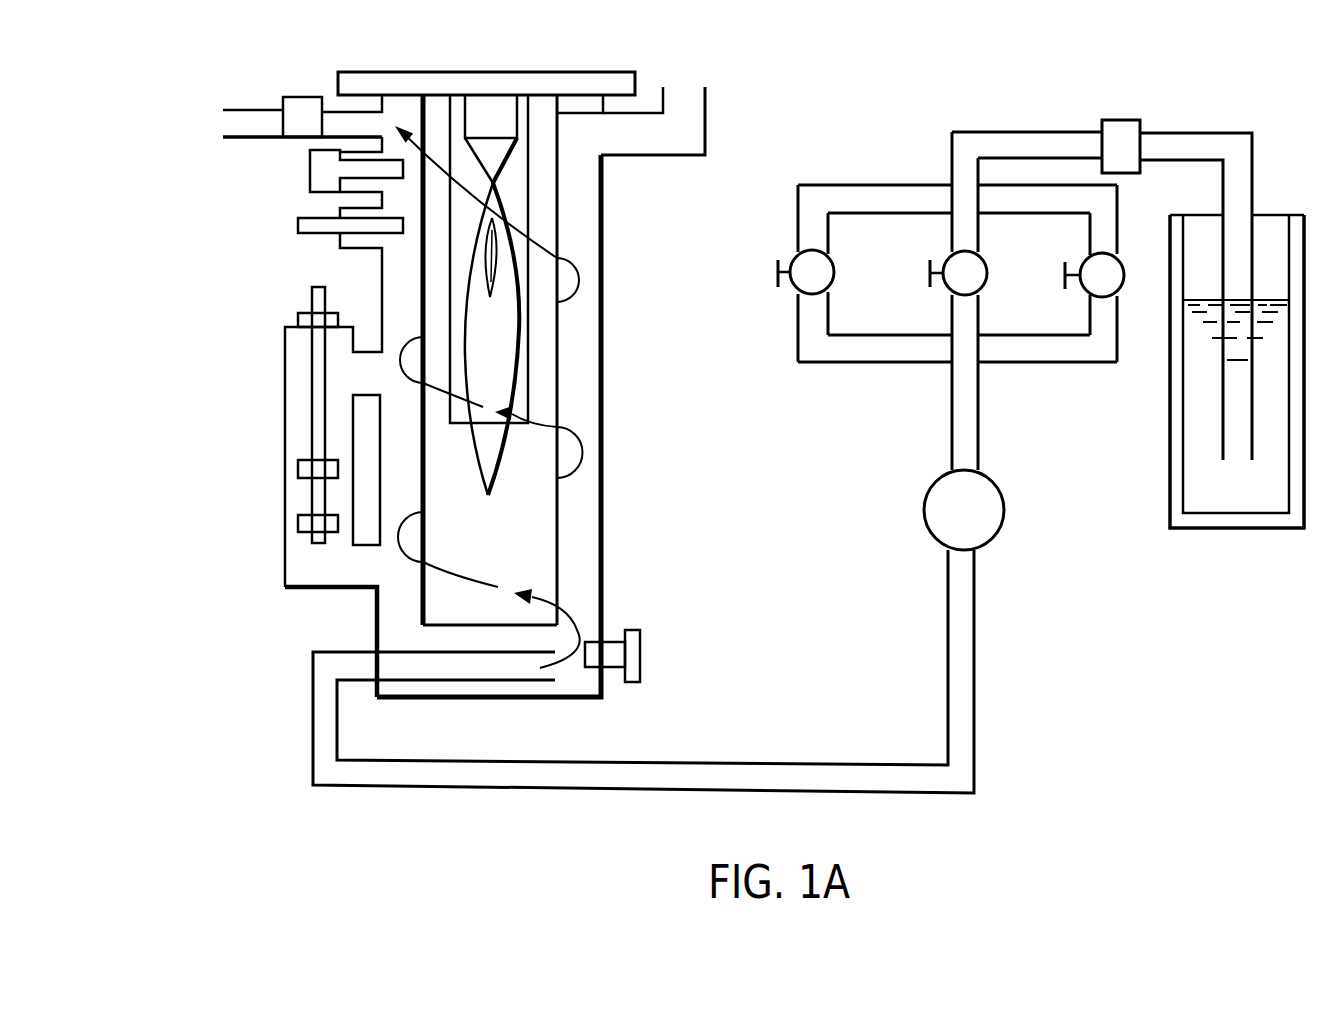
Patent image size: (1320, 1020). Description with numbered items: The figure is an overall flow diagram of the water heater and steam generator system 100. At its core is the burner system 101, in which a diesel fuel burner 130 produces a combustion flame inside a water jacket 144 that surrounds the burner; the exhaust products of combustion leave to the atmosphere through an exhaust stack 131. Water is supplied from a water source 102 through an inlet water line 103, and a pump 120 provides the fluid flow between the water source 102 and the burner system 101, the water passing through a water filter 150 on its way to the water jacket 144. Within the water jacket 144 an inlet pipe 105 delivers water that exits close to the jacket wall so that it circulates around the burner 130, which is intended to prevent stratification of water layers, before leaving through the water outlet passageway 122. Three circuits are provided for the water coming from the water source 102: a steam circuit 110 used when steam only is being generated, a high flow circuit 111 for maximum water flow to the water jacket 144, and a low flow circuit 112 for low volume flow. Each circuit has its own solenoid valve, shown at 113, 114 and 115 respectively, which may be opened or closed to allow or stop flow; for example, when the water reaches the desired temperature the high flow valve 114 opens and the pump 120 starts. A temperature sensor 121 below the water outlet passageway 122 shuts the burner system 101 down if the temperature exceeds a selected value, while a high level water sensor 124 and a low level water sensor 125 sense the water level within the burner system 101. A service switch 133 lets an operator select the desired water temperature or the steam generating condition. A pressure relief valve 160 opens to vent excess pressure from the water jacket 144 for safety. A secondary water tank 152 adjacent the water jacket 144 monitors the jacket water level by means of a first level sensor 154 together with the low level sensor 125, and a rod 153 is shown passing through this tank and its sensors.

The water heater and steam generator system 100 is at (755, 495).
The burner system 101 is at (625, 325).
The water source 102 is at (1198, 542).
The inlet water line 103 is at (1192, 133).
The inlet pipe 105 is at (483, 682).
The steam circuit 110 is at (1060, 185).
The high flow circuit 111 is at (952, 237).
The low flow circuit 112 is at (798, 215).
The solenoid valve 113 is at (1102, 298).
The solenoid valve 114 is at (965, 297).
The solenoid valve 115 is at (812, 298).
The pump 120 is at (930, 478).
The temperature sensor 121 is at (308, 233).
The water outlet passageway 122 is at (337, 108).
The high level water sensor 124 is at (310, 173).
The low level water sensor 125 is at (302, 532).
The diesel fuel burner 130 is at (528, 377).
The exhaust stack 131 is at (707, 118).
The service switch 133 is at (300, 96).
The water jacket 144 is at (603, 546).
The water filter 150 is at (1112, 120).
The secondary water tank 152 is at (285, 377).
The rod 153 is at (312, 297).
The first level sensor 154 is at (300, 465).
The pressure relief valve 160 is at (640, 633).